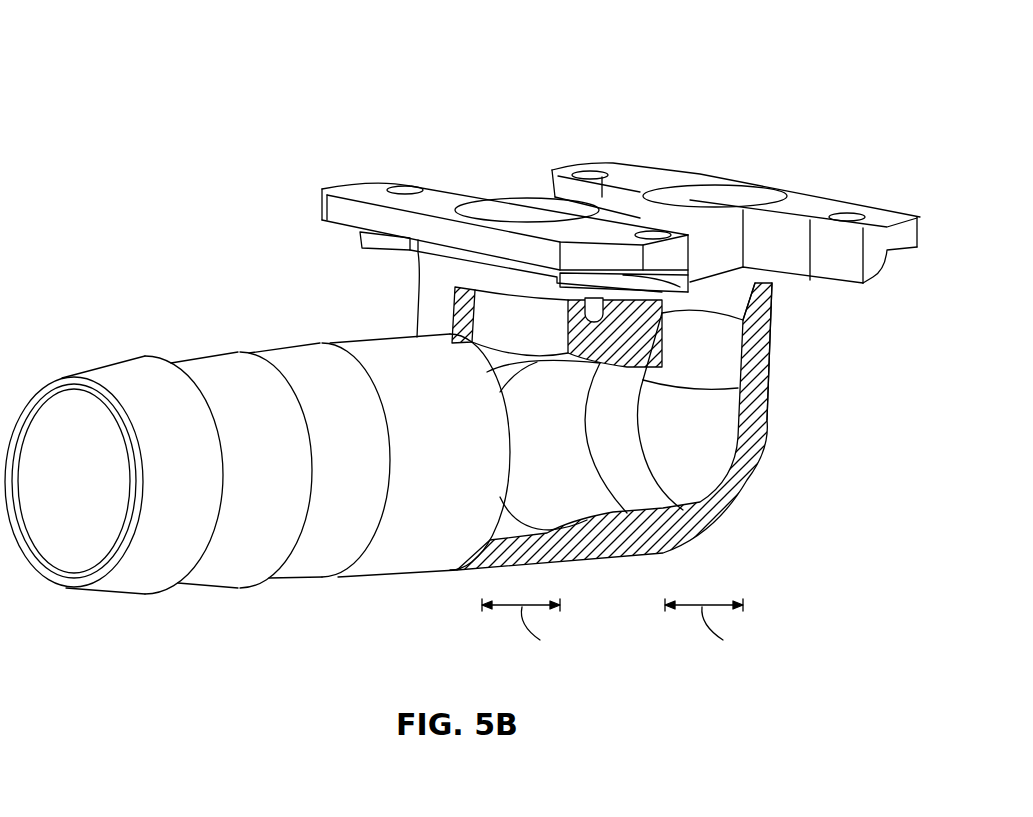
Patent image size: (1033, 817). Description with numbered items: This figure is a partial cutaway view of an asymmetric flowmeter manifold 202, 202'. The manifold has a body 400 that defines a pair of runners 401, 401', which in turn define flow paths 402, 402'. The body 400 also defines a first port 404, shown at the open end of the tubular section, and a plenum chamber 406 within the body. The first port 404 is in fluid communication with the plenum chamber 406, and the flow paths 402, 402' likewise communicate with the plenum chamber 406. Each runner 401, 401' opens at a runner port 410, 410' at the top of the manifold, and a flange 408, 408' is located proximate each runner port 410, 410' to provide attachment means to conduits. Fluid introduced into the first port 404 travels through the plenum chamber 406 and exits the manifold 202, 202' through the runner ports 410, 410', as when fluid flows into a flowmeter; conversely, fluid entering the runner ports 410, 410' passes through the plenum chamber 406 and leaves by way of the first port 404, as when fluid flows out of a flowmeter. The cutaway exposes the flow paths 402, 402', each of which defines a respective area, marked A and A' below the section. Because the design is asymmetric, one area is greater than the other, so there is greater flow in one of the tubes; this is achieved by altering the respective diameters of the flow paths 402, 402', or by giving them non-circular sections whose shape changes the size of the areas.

The asymmetric manifold 202 is at (462, 348).
The asymmetric manifold 202' is at (462, 390).
The body 400 is at (382, 563).
The runner 401 is at (502, 284).
The runner 401' is at (799, 351).
The flow path 402 is at (557, 327).
The flow path 402' is at (690, 410).
The first port 404 is at (50, 495).
The plenum chamber 406 is at (565, 463).
The flange 408 is at (505, 210).
The flange 408' is at (736, 196).
The runner port 410 is at (527, 169).
The runner port 410' is at (716, 156).